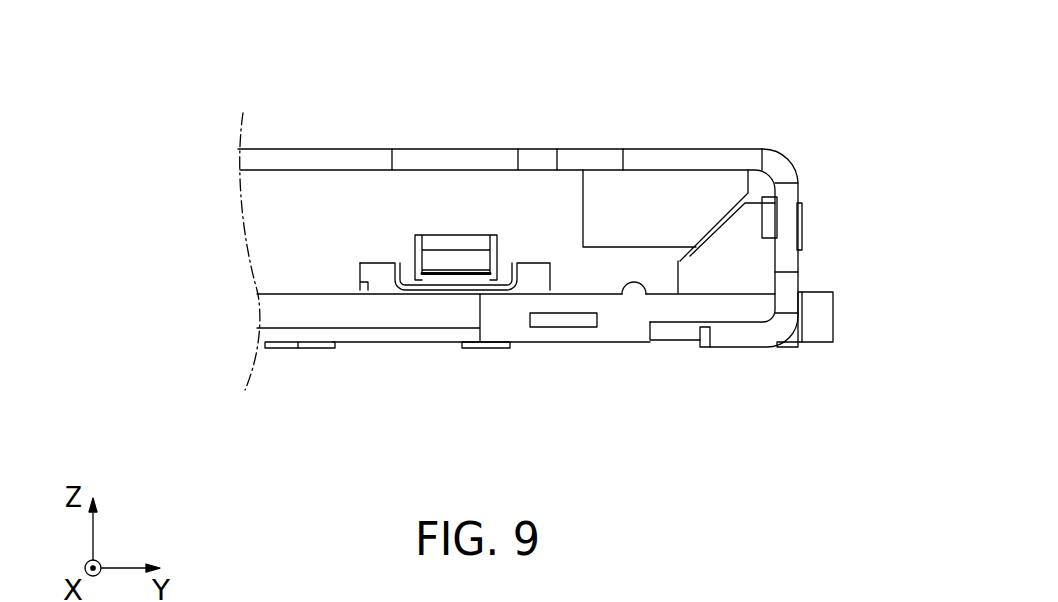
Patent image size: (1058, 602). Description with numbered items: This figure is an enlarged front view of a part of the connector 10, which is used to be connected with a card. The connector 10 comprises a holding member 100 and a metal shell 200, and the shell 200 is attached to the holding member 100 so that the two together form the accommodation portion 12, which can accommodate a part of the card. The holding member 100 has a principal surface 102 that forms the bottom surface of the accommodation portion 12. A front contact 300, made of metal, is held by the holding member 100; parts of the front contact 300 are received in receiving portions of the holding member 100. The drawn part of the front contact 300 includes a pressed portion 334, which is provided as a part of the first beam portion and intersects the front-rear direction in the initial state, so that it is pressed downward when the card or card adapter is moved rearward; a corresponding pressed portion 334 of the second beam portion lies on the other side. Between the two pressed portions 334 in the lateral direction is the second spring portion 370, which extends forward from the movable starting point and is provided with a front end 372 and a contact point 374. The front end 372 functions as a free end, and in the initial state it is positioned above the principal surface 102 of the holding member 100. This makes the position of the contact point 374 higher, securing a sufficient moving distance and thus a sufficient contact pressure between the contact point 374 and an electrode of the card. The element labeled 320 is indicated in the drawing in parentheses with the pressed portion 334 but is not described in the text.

The connector 10 is at (716, 122).
The accommodation portion 12 is at (278, 215).
The holding member 100 is at (268, 314).
The principal surface 102 is at (645, 294).
The shell 200 is at (645, 153).
The front contact 300 is at (408, 232).
The holding member 320 is at (457, 361).
The pressed portion 334 is at (375, 275).
The second spring portion 370 is at (456, 234).
The front end 372 is at (455, 272).
The contact point 374 is at (458, 235).